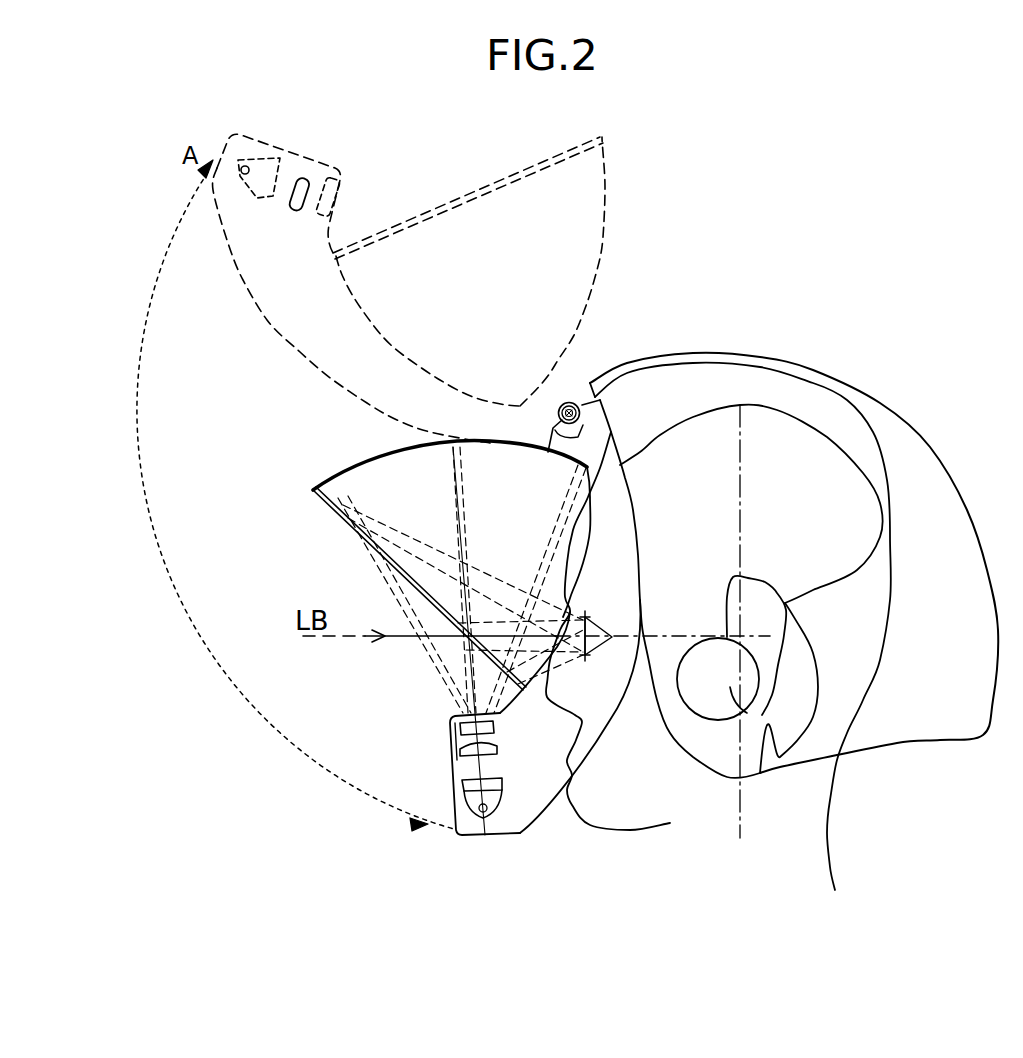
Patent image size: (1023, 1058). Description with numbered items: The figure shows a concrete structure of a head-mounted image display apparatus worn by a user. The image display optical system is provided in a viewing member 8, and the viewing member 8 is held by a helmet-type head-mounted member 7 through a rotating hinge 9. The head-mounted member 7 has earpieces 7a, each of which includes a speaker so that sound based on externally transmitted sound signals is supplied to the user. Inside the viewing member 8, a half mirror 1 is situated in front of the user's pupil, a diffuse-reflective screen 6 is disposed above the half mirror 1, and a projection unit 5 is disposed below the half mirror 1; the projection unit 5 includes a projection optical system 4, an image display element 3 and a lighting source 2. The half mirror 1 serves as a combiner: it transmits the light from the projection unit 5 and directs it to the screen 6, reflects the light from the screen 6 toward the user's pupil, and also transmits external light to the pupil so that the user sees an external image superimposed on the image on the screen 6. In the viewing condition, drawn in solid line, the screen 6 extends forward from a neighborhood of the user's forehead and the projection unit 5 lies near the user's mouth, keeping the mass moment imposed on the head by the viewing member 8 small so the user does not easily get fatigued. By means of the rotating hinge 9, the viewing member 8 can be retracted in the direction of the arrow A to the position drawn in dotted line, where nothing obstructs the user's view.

The half mirror 1 is at (313, 493).
The lighting source 2 is at (466, 808).
The image display element 3 is at (462, 784).
The projection optical system 4 is at (450, 737).
The projection unit 5 is at (400, 724).
The diffuse-reflective screen 6 is at (352, 470).
The head-mounted member 7 is at (905, 418).
The earpieces 7a is at (720, 763).
The viewing member 8 is at (537, 818).
The rotating hinge 9 is at (578, 402).